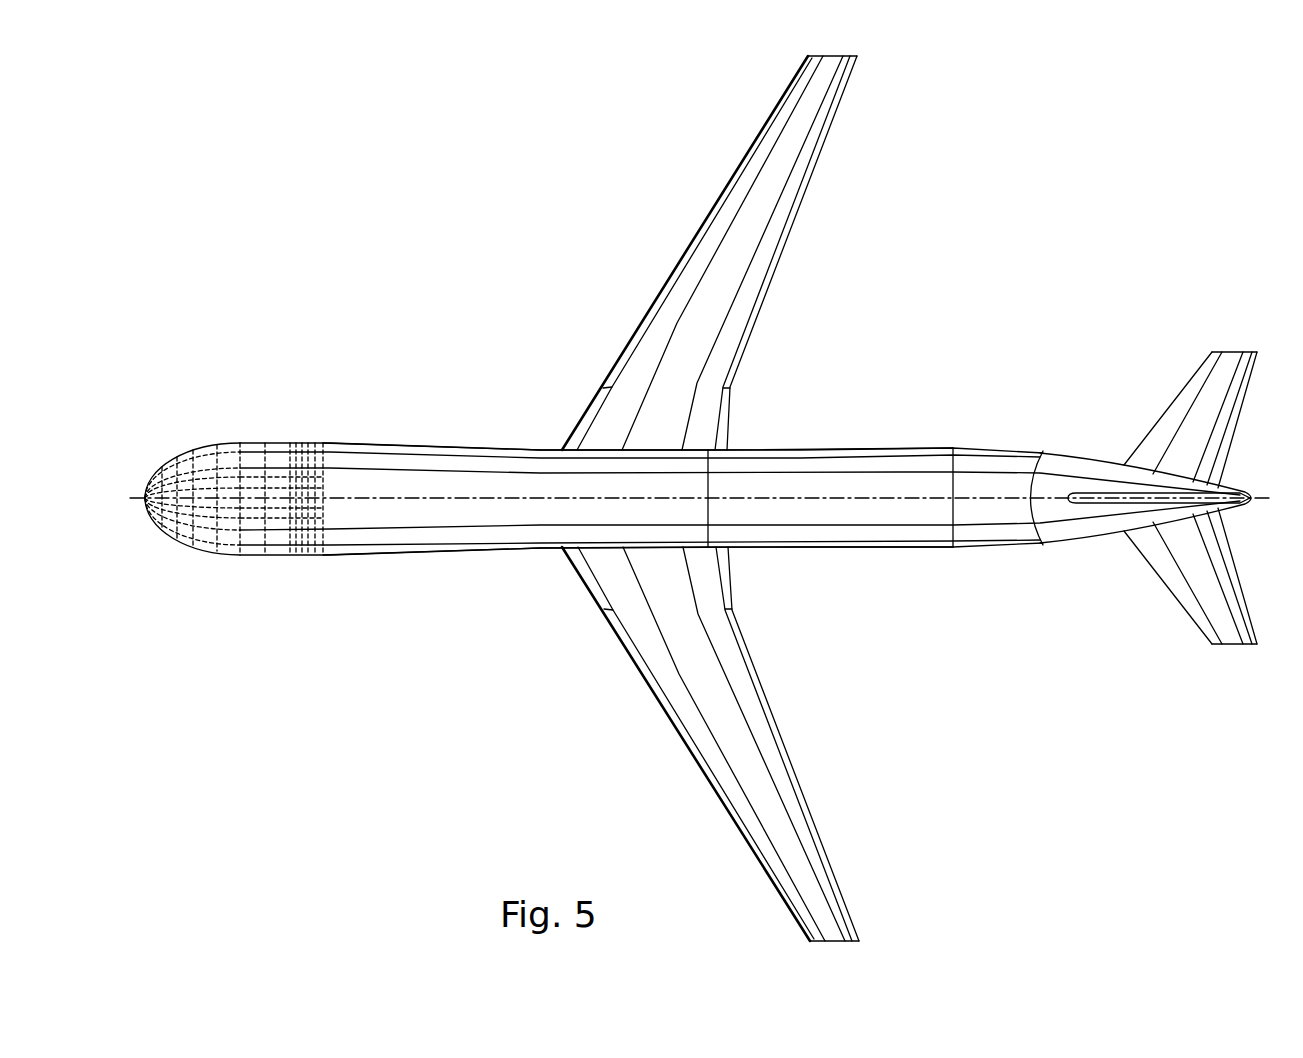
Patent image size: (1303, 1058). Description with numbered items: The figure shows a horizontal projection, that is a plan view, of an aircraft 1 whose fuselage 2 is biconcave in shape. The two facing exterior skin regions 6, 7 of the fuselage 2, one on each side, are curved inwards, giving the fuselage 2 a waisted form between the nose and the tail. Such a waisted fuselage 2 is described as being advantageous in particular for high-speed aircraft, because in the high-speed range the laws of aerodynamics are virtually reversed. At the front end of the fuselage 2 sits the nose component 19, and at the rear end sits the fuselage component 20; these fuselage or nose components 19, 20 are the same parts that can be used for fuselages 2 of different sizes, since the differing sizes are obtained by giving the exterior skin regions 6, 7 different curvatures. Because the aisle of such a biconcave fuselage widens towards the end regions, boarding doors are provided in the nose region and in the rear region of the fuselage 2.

The aircraft 1 is at (296, 278).
The fuselage 2 is at (850, 450).
The exterior skin region 6 is at (755, 450).
The exterior skin region 7 is at (510, 548).
The nose component 19 is at (252, 546).
The fuselage component 20 is at (1060, 515).